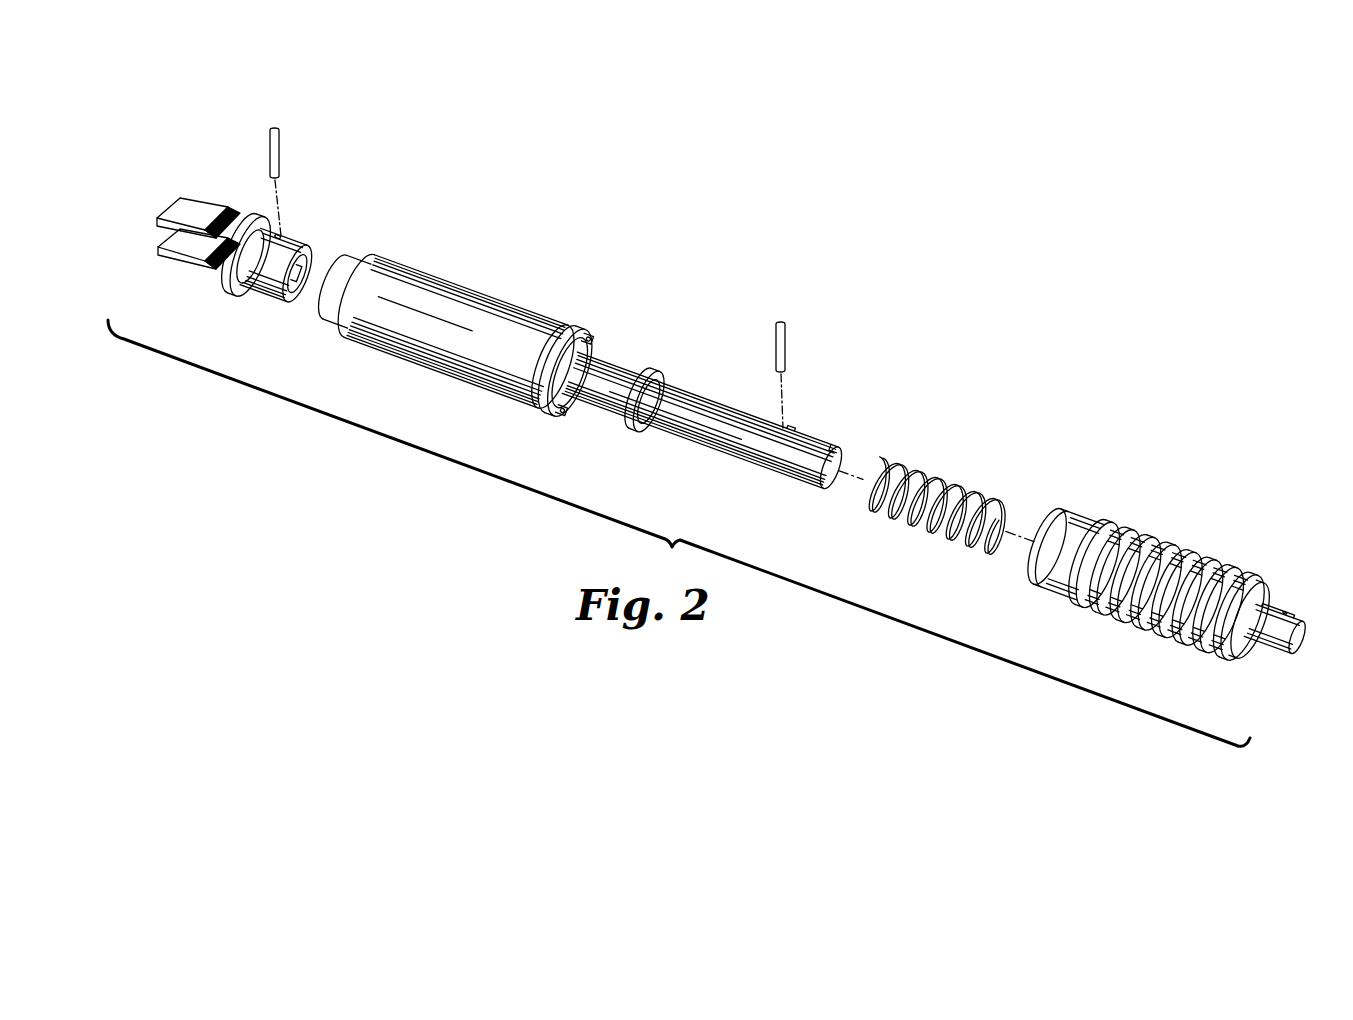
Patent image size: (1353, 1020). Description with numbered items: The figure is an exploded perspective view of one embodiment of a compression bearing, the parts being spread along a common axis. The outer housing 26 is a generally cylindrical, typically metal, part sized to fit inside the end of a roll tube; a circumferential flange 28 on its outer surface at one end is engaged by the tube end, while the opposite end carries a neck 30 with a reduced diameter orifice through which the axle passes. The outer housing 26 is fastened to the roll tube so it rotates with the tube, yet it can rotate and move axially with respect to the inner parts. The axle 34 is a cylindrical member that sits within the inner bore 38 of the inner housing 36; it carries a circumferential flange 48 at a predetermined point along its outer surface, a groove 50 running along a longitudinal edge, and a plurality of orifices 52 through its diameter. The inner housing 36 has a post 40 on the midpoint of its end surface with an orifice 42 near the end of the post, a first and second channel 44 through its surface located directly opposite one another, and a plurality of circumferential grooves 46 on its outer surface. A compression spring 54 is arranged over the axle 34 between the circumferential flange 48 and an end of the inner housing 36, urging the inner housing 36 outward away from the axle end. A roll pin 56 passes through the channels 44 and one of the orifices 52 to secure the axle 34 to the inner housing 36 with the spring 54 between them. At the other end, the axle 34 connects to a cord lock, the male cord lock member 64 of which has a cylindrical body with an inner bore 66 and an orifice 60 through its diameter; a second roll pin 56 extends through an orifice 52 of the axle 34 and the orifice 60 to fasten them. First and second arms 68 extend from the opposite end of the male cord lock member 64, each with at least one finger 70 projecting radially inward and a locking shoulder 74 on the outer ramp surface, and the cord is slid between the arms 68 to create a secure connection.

The outer housing 26 is at (440, 368).
The circumferential flange 28 is at (560, 322).
The neck 30 is at (337, 268).
The axle 34 is at (737, 450).
The inner housing 36 is at (1207, 550).
The inner bore 38 is at (1040, 527).
The post 40 is at (1273, 643).
The orifice 42 is at (1280, 605).
The channel 44 is at (1155, 547).
The circumferential grooves 46 is at (1113, 603).
The circumferential flange 48 is at (646, 368).
The groove 50 is at (708, 405).
The orifices 52 is at (573, 332).
The spring 54 is at (927, 475).
The roll pin 56 is at (282, 150).
The orifice 60 is at (279, 236).
The male cord lock member 64 is at (270, 299).
The inner bore 66 is at (308, 280).
The first and second arms 68 is at (190, 204).
The finger 70 is at (158, 246).
The locking shoulder 74 is at (240, 210).